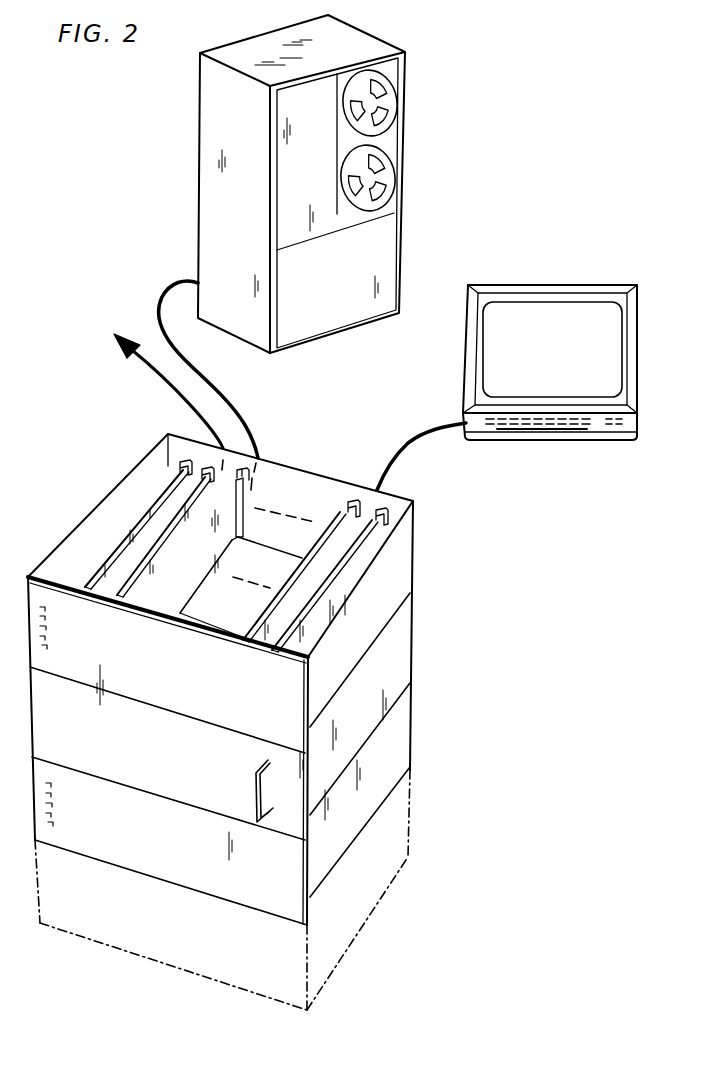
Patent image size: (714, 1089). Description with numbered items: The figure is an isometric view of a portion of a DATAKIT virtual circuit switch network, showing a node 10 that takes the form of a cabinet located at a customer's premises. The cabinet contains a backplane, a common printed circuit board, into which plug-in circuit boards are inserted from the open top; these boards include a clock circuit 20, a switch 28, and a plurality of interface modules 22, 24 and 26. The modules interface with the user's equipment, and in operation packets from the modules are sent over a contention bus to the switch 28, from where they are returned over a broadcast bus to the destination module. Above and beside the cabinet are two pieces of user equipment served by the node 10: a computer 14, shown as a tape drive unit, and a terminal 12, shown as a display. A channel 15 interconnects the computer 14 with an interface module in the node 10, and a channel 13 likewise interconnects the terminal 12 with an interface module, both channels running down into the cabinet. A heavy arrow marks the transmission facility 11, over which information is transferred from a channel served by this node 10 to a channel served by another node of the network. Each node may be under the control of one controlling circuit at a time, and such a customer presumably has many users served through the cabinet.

The node 10 is at (393, 682).
The transmission facility 11 is at (153, 376).
The terminal 12 is at (548, 285).
The channel 13 is at (421, 456).
The computer 14 is at (407, 102).
The channel 15 is at (243, 423).
The clock circuit 20 is at (112, 527).
The module 22 is at (107, 567).
The module 24 is at (203, 510).
The module 26 is at (258, 618).
The switch 28 is at (338, 562).